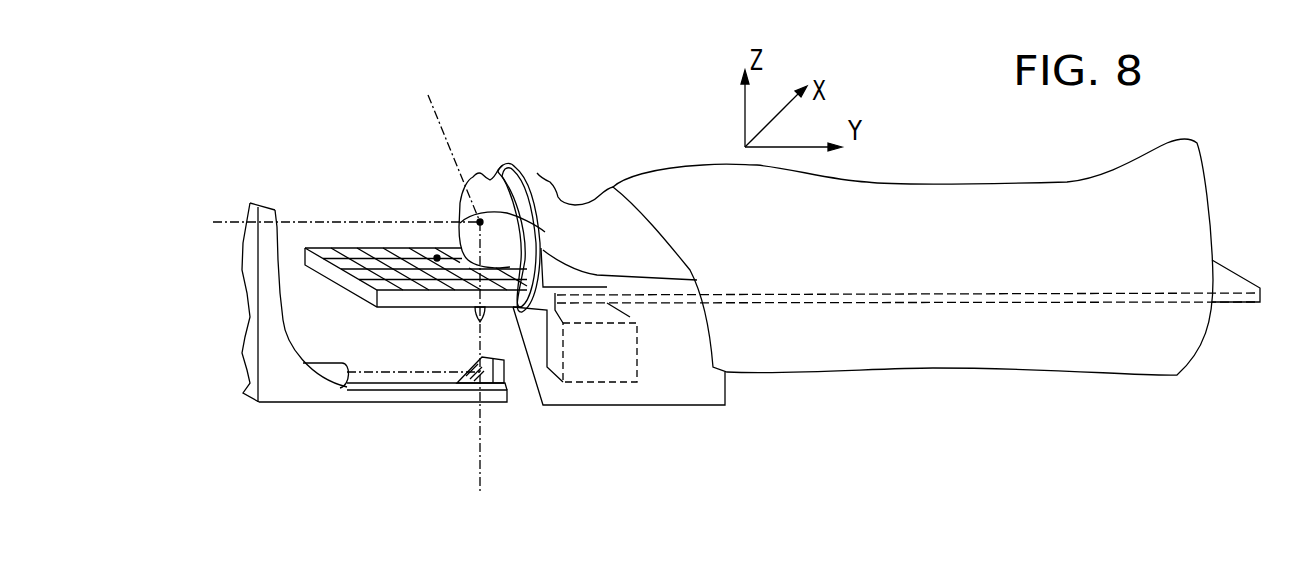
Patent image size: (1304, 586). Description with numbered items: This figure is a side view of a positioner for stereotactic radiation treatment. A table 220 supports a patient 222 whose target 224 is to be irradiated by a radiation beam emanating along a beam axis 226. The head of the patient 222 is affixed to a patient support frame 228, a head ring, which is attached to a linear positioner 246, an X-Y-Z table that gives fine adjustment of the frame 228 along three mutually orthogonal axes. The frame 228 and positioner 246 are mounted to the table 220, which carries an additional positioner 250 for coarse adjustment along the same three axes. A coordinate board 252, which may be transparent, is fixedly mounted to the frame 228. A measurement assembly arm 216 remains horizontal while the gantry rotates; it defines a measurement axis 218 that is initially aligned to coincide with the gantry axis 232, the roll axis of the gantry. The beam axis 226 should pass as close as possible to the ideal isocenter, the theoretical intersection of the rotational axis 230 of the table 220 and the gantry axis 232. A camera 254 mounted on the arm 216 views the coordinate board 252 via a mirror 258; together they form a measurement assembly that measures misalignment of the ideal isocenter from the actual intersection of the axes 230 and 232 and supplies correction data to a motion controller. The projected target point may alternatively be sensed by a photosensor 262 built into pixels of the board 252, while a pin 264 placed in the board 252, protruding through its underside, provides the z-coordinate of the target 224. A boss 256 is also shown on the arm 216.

The measurement assembly arm 216 is at (437, 398).
The measurement axis 218 is at (303, 222).
The table 220 is at (590, 288).
The patient 222 is at (993, 195).
The target 224 is at (545, 232).
The beam axis 226 is at (441, 129).
The patient support frame 228 is at (520, 166).
The rotational axis 230 is at (483, 493).
The gantry axis 232 is at (233, 223).
The linear positioner 246 is at (639, 323).
The positioner 250 is at (613, 405).
The coordinate board 252 is at (397, 250).
The camera 254 is at (323, 368).
The boss 256 is at (382, 372).
The mirror 258 is at (493, 383).
The photosensor 262 is at (438, 255).
The pin 264 is at (475, 314).